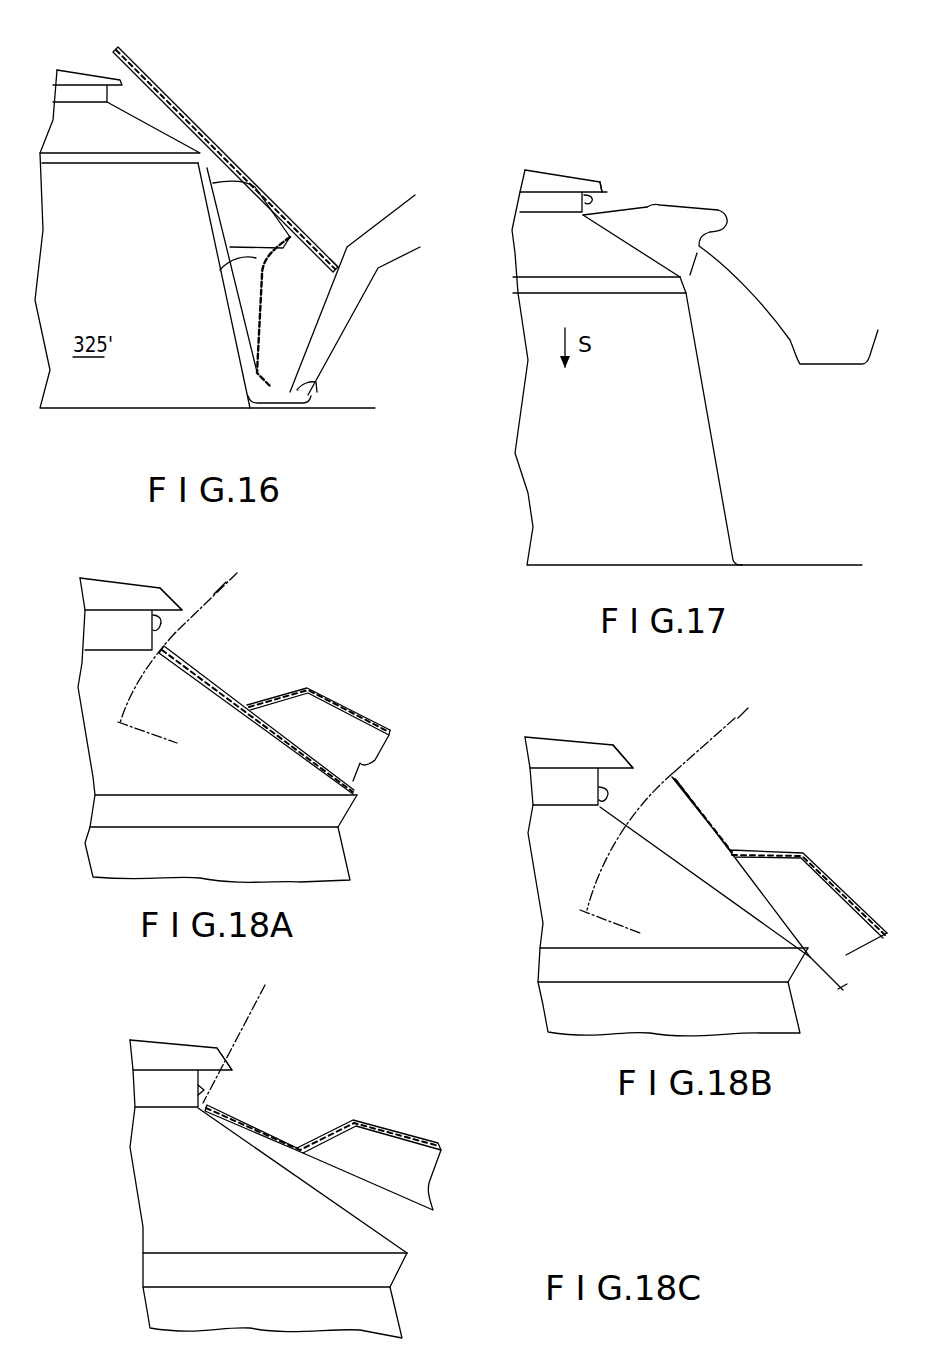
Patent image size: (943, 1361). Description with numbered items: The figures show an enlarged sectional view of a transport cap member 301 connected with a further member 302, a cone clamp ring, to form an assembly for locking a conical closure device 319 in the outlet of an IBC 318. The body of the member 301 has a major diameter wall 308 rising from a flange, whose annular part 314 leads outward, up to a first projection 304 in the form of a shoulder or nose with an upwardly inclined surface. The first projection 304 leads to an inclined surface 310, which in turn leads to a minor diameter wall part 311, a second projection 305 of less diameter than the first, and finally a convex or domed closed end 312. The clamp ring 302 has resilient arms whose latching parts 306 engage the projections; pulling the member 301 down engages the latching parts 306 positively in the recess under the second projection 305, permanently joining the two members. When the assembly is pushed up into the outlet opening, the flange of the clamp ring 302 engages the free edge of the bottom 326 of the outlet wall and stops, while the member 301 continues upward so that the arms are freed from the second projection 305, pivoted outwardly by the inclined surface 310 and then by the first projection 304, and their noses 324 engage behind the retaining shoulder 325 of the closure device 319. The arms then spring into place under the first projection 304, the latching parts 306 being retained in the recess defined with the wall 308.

In FIG. 16, the member 301 is at (120, 415).
In FIG. 17, the member 301 is at (742, 522).
In FIG. 18A, the member 301 is at (362, 870).
In FIG. 18B, the member 301 is at (815, 1028).
In FIG. 18C, the member 301 is at (417, 1318).
In FIG. 16, the further member 302 is at (248, 302).
In FIG. 17, the further member 302 is at (822, 383).
In FIG. 18A, the further member 302 is at (398, 703).
In FIG. 18B, the further member 302 is at (830, 852).
In FIG. 18C, the further member 302 is at (453, 1203).
In FIG. 16, the first projection 304 is at (212, 138).
In FIG. 17, the first projection 304 is at (693, 283).
In FIG. 18A, the first projection 304 is at (357, 807).
In FIG. 18B, the first projection 304 is at (847, 902).
In FIG. 18C, the first projection 304 is at (408, 1253).
In FIG. 16, the second projection 305 is at (130, 73).
In FIG. 17, the second projection 305 is at (607, 192).
In FIG. 18A, the second projection 305 is at (183, 593).
In FIG. 18B, the second projection 305 is at (630, 763).
In FIG. 18C, the second projection 305 is at (233, 1072).
In FIG. 16, the latching part 306 is at (233, 167).
In FIG. 17, the latching part 306 is at (607, 210).
In FIG. 18A, the latching part 306 is at (290, 677).
In FIG. 18B, the latching part 306 is at (698, 787).
In FIG. 18C, the latching part 306 is at (308, 1122).
In FIG. 16, the major diameter wall 308 is at (227, 290).
In FIG. 17, the major diameter wall 308 is at (705, 432).
In FIG. 18A, the major diameter wall 308 is at (222, 590).
In FIG. 18B, the major diameter wall 308 is at (746, 715).
In FIG. 17, the inclined surface 310 is at (646, 252).
In FIG. 18A, the inclined surface 310 is at (300, 737).
In FIG. 18B, the inclined surface 310 is at (690, 855).
In FIG. 18C, the inclined surface 310 is at (322, 1188).
In FIG. 17, the minor diameter wall part 311 is at (593, 178).
In FIG. 18A, the minor diameter wall part 311 is at (155, 583).
In FIG. 18B, the minor diameter wall part 311 is at (603, 807).
In FIG. 18C, the minor diameter wall part 311 is at (212, 1088).
In FIG. 16, the closed end 312 is at (76, 70).
In FIG. 17, the closed end 312 is at (543, 187).
In FIG. 18A, the closed end 312 is at (121, 588).
In FIG. 18B, the closed end 312 is at (560, 747).
In FIG. 18C, the closed end 312 is at (175, 1055).
In FIG. 17, the annular part 314 is at (820, 563).
In FIG. 16, the IBC 318 is at (353, 298).
In FIG. 16, the closure device 319 is at (317, 240).
In FIG. 17, the nose 324 is at (717, 228).
In FIG. 16, the retaining shoulder 325 is at (220, 270).
In FIG. 16, the bottom 326 is at (317, 383).